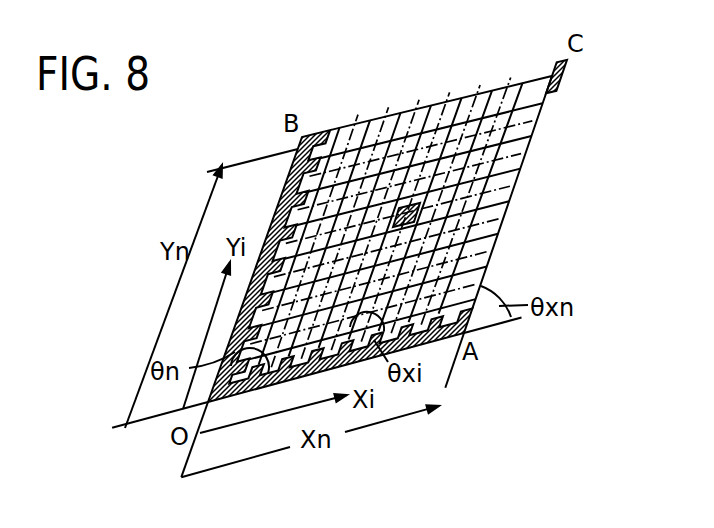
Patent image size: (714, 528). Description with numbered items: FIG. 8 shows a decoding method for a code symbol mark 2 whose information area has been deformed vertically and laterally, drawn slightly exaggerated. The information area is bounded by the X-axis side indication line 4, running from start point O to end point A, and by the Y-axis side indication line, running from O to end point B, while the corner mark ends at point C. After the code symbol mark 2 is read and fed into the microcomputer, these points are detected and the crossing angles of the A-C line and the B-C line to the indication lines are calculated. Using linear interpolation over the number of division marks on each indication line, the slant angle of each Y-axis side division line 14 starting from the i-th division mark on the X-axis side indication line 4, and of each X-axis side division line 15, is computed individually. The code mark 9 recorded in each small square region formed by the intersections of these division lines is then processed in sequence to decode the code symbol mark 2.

The code symbol mark 2 is at (553, 122).
The X-axis side indication line 4 is at (238, 314).
The code mark 9 is at (418, 203).
The Y-axis side division line 14 is at (489, 96).
The X-axis side division line 15 is at (523, 245).